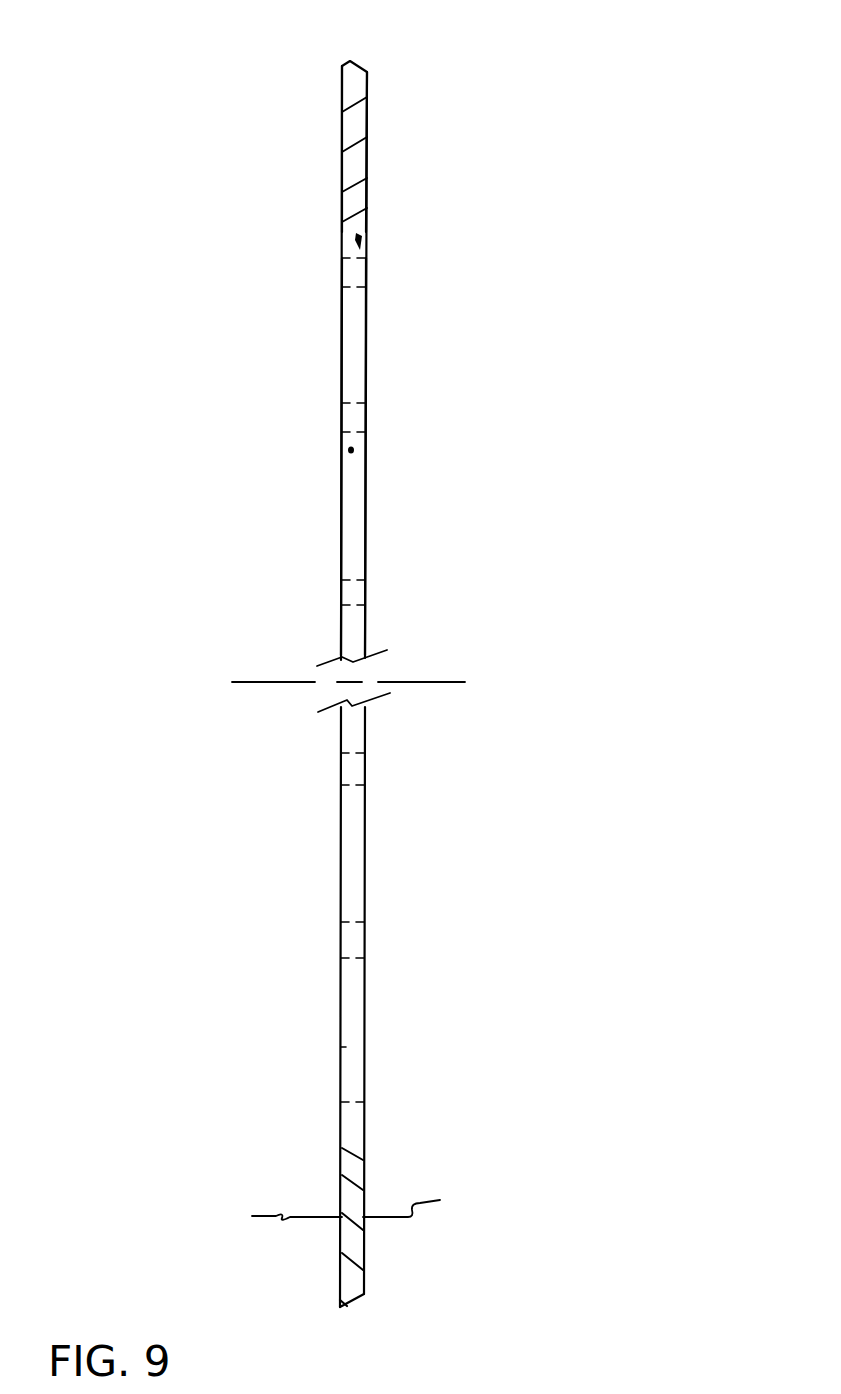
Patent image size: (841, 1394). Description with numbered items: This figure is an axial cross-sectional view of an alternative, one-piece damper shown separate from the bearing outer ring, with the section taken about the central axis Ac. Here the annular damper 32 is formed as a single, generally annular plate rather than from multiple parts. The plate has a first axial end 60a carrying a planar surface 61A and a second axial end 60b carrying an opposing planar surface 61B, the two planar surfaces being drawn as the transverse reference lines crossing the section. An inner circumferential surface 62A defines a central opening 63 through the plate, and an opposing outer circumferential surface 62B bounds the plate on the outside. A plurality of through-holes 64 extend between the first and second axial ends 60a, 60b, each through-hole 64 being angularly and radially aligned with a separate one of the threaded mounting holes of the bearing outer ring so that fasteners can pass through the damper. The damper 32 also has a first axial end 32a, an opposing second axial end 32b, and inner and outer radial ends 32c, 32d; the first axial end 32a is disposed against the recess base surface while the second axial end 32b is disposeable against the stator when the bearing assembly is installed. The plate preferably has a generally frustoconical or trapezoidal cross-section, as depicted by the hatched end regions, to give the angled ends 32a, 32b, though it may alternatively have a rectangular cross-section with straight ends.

The annular damper 32 is at (412, 205).
The first axial end 32a is at (330, 190).
The second axial end 32b is at (380, 160).
The inner radial end 32c is at (366, 250).
The outer radial end 32d is at (360, 54).
The first axial end of annular plate 60a is at (341, 297).
The second axial end of annular plate 60b is at (367, 316).
The central opening 63 is at (354, 449).
The through-holes 64 is at (360, 593).
The central axis Ac is at (447, 682).
The inner circumferential surface 62A is at (352, 1144).
The outer circumferential surface 62B is at (352, 1306).
The planar surface 61A is at (269, 1215).
The opposing planar surface 61B is at (426, 1209).